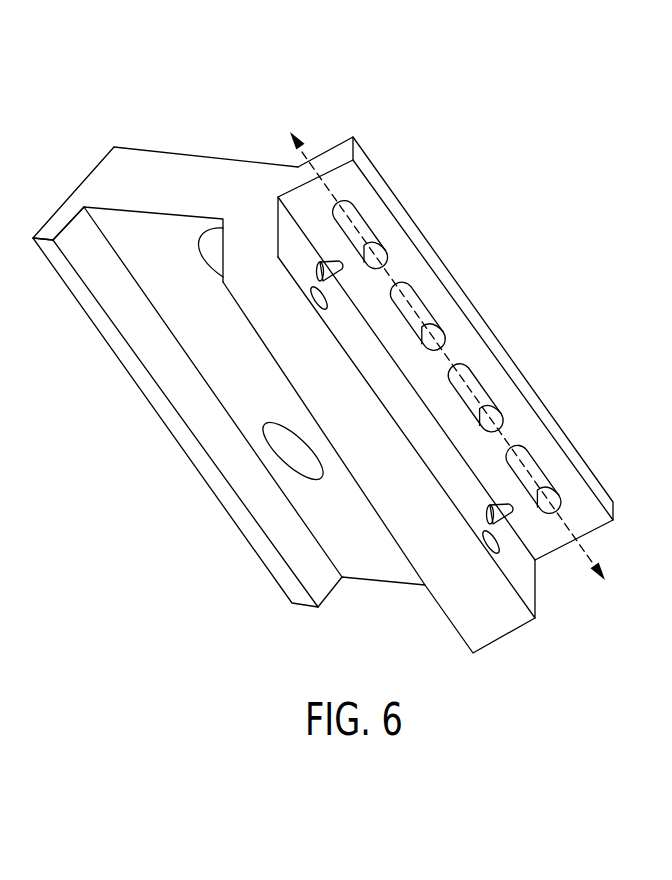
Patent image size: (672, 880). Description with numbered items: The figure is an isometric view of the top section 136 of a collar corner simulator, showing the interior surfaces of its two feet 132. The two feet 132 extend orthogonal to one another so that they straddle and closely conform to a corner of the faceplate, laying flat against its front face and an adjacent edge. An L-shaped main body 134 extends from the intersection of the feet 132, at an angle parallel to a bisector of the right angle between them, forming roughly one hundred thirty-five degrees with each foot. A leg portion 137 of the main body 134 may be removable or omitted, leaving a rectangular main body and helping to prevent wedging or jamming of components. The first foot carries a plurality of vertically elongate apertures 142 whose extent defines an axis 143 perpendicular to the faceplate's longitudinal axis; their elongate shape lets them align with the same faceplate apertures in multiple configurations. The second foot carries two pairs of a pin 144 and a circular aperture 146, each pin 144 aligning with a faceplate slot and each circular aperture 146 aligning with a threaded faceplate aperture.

The top section 136 is at (452, 131).
The main body 134 is at (152, 166).
The leg portion 137 is at (62, 223).
The feet 132 is at (337, 156).
The vertically elongate apertures 142 is at (483, 393).
The axis 143 is at (588, 552).
The pin 144 is at (334, 268).
The circular aperture 146 is at (328, 296).